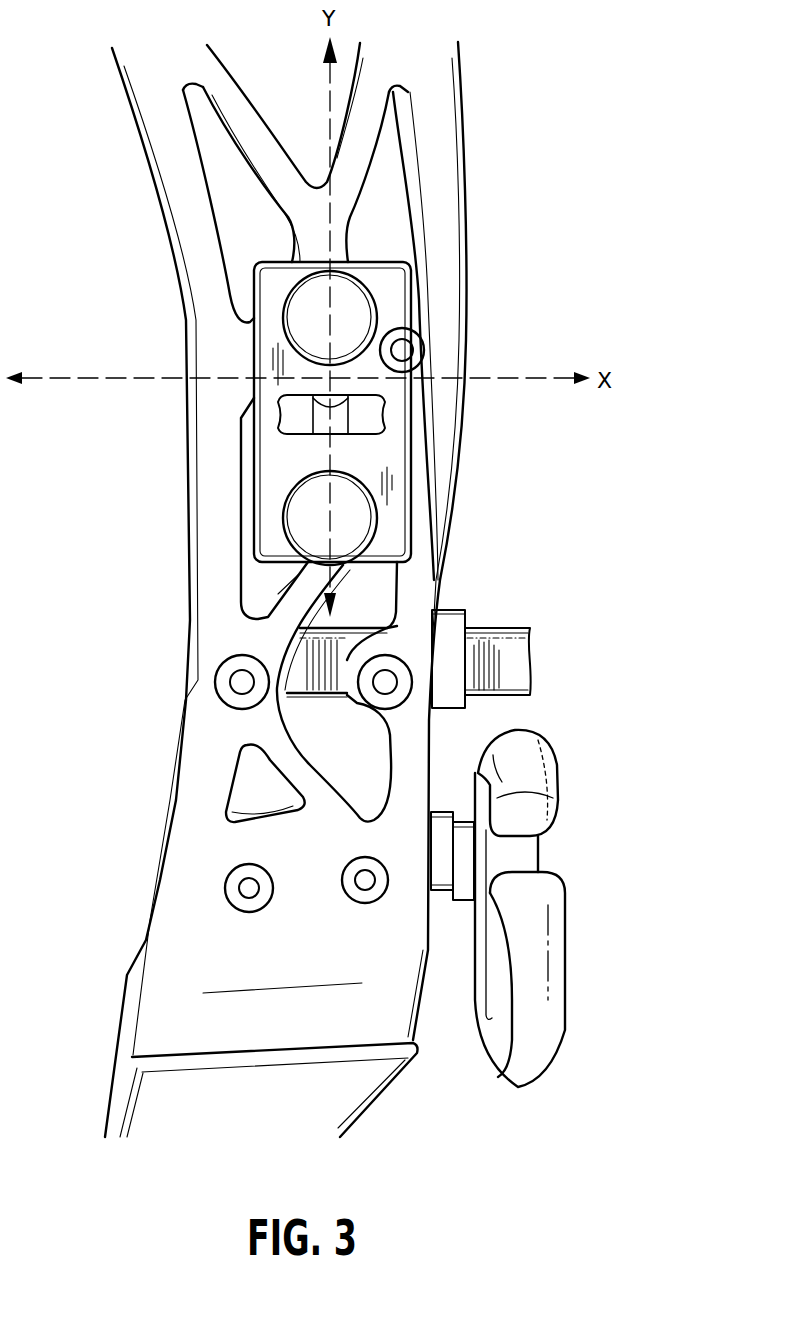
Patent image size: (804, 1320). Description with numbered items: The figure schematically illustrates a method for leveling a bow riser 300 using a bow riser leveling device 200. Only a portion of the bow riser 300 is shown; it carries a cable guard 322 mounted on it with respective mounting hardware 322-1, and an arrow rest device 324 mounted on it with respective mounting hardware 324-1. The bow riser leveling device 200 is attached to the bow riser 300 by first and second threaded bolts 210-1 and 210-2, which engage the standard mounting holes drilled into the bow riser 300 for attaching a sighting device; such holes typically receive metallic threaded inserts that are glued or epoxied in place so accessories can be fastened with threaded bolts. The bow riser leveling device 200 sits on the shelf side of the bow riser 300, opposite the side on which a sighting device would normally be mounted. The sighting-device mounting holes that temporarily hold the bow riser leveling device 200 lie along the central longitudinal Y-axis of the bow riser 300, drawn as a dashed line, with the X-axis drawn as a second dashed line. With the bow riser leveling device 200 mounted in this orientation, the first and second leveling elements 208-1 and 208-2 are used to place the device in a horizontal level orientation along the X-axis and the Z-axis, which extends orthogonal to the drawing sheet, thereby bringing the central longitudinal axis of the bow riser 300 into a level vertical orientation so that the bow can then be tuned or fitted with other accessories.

The bow riser 300 is at (467, 167).
The bow riser leveling device 200 is at (325, 385).
The first threaded bolt 210-1 is at (288, 312).
The second threaded bolt 210-2 is at (298, 508).
The first leveling element 208-1 is at (420, 351).
The second leveling element 208-2 is at (368, 432).
The cable guard 322 is at (503, 627).
The mounting hardware 322-1 is at (367, 686).
The arrow rest device 324 is at (552, 762).
The mounting hardware 324-1 is at (342, 868).